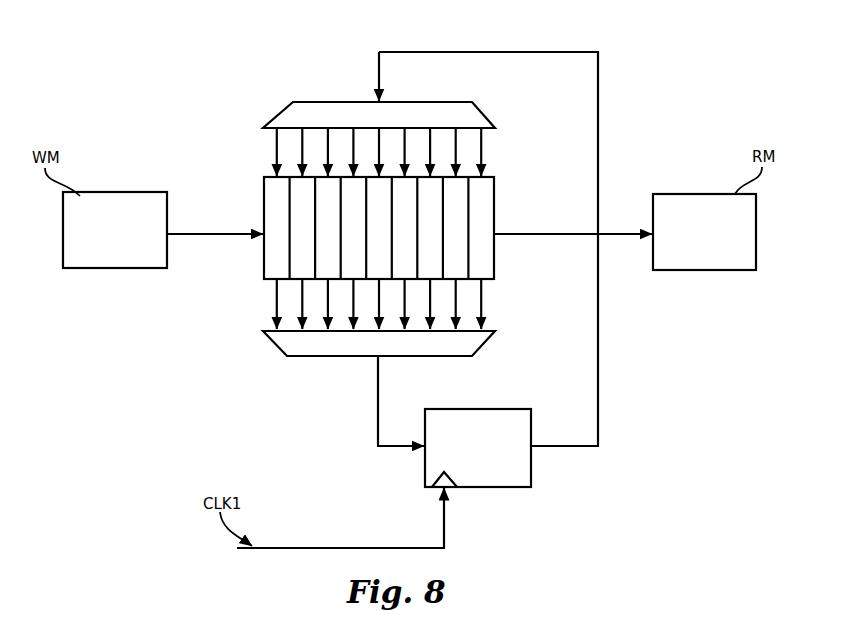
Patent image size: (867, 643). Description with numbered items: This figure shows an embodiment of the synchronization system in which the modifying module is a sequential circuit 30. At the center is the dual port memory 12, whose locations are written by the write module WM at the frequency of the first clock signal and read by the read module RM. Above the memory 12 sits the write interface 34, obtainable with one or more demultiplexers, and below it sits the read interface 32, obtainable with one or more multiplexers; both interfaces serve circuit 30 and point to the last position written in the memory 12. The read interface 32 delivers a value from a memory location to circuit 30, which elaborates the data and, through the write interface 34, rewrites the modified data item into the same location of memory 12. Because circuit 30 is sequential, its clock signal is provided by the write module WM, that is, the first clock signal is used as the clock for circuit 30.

The memory 12 is at (495, 177).
The write interface 34 is at (293, 102).
The read interface 32 is at (265, 331).
The sequential circuit 30 is at (503, 409).